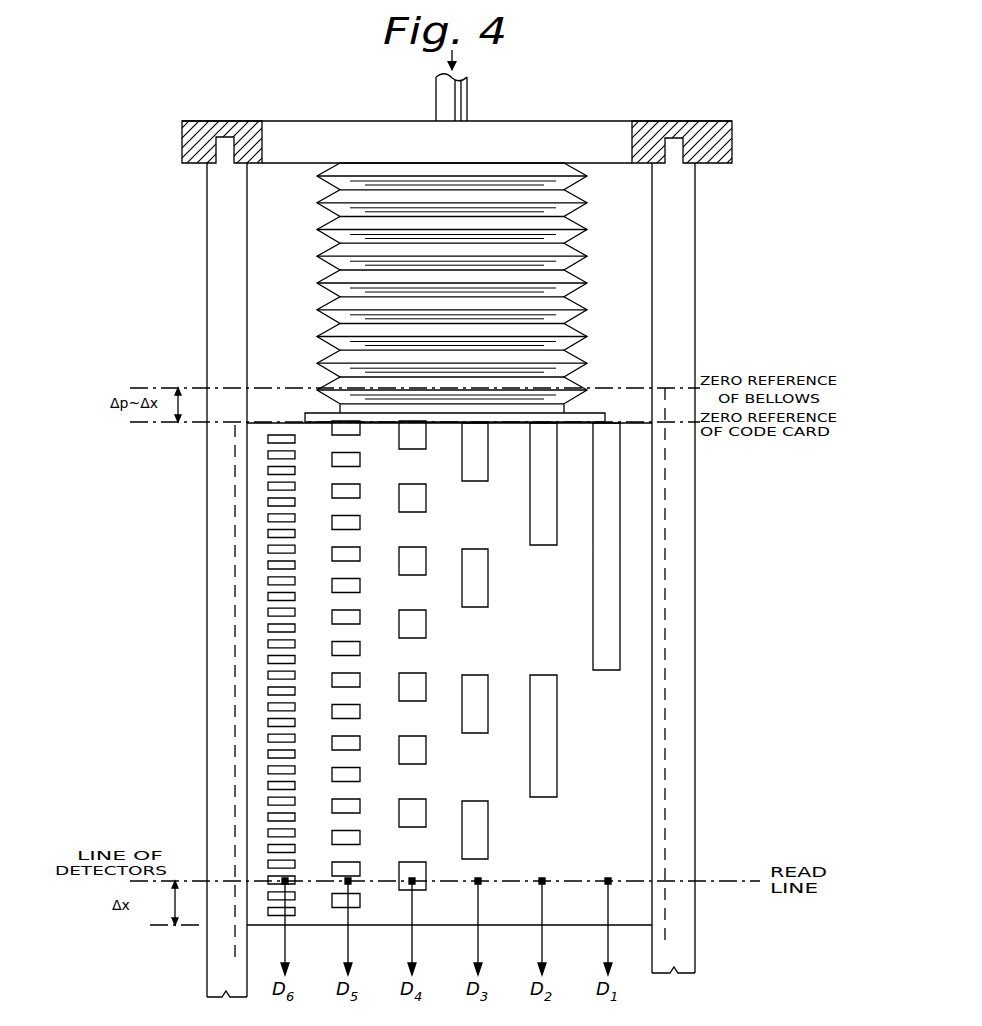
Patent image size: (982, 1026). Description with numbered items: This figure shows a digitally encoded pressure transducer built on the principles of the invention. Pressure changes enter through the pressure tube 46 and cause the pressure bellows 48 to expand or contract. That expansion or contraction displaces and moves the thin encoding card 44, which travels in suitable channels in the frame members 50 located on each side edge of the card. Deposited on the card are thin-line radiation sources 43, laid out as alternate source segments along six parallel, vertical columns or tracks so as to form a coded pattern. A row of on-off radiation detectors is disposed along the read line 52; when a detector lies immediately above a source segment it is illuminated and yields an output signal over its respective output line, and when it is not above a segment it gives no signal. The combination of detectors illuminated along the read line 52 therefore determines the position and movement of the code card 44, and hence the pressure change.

The thin-line radiation sources 43 is at (593, 593).
The encoding card 44 is at (640, 772).
The pressure tube 46 is at (466, 100).
The pressure bellows 48 is at (587, 297).
The frame members 50 is at (207, 680).
The read line 52 is at (726, 882).